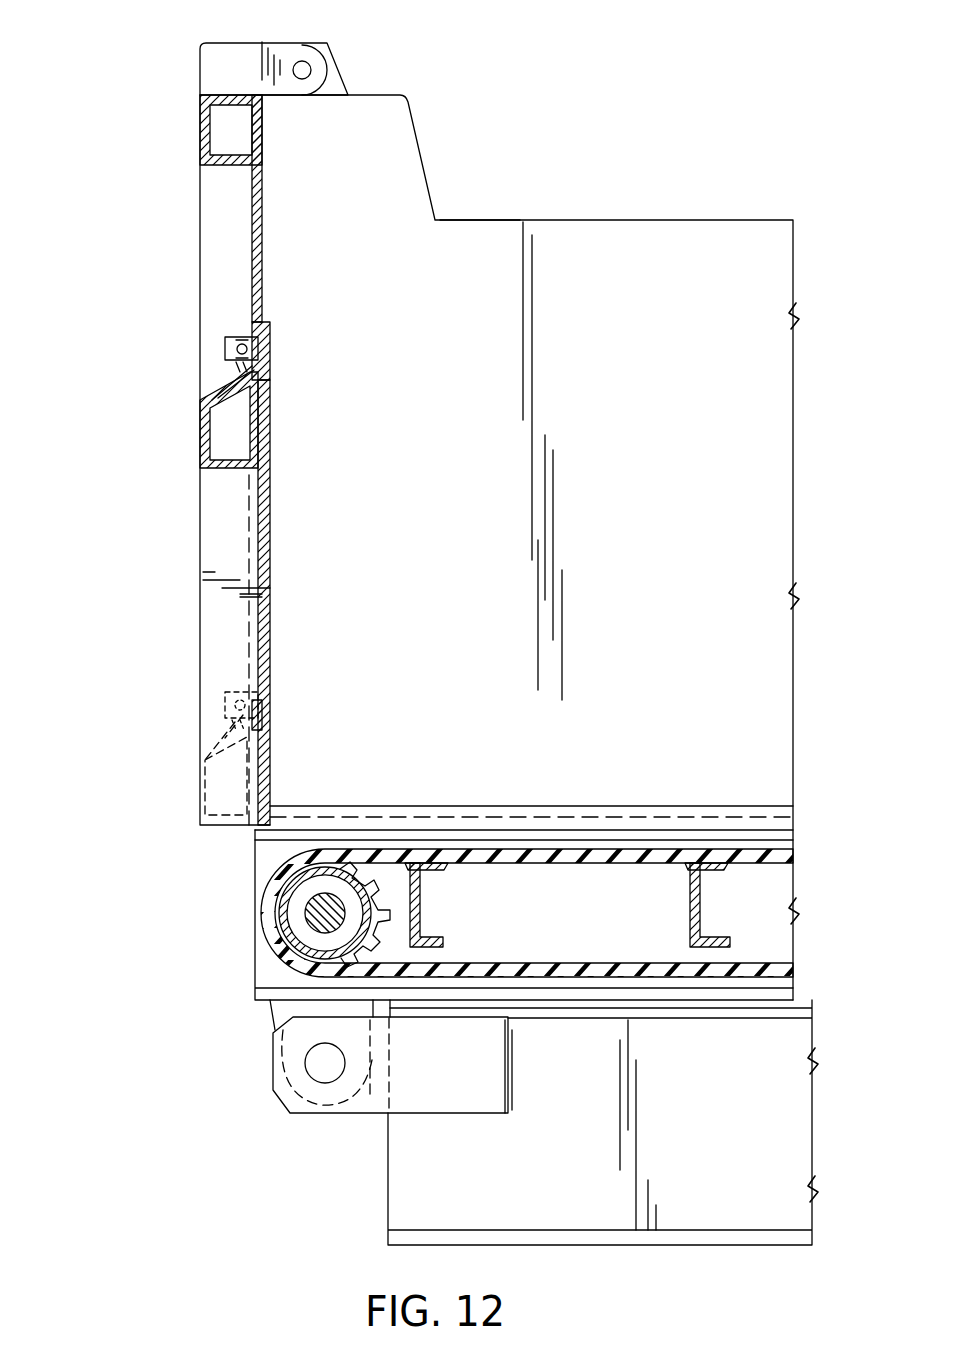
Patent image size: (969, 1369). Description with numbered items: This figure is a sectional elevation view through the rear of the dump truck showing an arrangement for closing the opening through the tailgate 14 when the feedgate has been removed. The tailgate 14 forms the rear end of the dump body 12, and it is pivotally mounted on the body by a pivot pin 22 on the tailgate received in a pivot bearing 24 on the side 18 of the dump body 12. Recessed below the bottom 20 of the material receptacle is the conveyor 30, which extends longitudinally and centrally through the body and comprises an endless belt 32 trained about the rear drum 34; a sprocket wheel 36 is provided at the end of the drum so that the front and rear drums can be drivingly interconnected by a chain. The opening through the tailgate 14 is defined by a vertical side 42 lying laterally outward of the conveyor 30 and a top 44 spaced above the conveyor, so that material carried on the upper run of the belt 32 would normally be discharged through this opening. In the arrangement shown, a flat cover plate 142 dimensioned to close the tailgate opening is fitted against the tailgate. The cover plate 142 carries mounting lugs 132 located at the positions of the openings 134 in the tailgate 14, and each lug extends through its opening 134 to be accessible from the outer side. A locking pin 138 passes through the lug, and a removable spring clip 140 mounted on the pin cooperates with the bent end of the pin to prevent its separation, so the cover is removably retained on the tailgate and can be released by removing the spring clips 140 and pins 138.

The dump body 12 is at (630, 160).
The tailgate 14 is at (200, 209).
The side 18 is at (485, 218).
The bottom 20 is at (612, 806).
The pivot pin 22 is at (308, 64).
The pivot bearing 24 is at (335, 78).
The conveyor 30 is at (256, 949).
The endless belt 32 is at (280, 878).
The rear drum 34 is at (305, 950).
The sprocket wheel 36 is at (392, 915).
The vertical side 42 is at (215, 607).
The top 44 is at (225, 468).
The mounting lug 132 is at (225, 343).
The opening 134 is at (259, 325).
The locking pin 138 is at (235, 353).
The spring clip 140 is at (238, 336).
The cover plate 142 is at (268, 508).